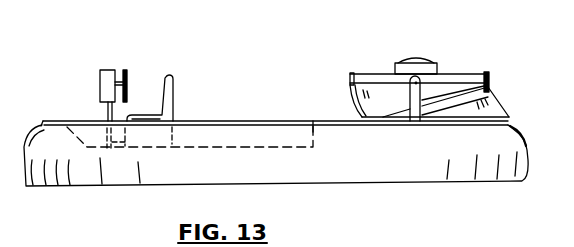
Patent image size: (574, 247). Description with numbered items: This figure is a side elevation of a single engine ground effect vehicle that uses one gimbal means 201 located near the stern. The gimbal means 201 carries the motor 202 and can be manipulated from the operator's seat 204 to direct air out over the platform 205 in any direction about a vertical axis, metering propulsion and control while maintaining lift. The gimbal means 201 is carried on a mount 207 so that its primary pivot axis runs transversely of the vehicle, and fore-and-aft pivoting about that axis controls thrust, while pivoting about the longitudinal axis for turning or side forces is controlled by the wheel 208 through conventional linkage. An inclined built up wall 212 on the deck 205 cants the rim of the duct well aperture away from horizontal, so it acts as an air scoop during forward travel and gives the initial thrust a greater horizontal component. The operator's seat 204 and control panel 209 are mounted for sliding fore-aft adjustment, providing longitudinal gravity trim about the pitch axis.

The gimbal means 201 is at (362, 59).
The motor 202 is at (433, 60).
The operator's seat 204 is at (173, 83).
The platform 205 is at (327, 120).
The mount 207 is at (423, 92).
The wheel 208 is at (125, 70).
The control panel 209 is at (100, 80).
The inclined built up wall 212 is at (489, 93).